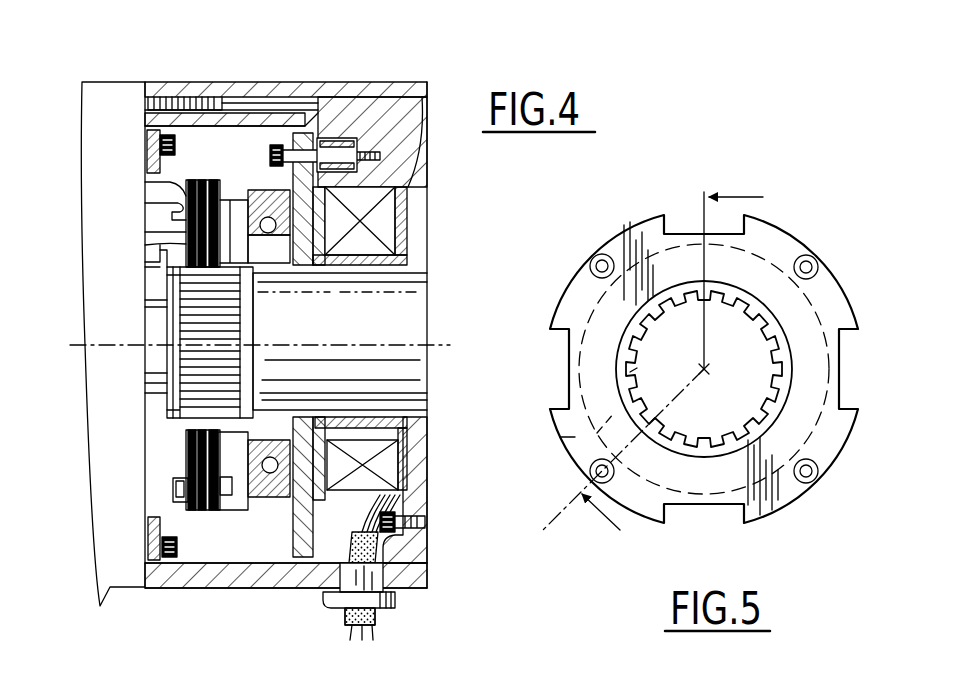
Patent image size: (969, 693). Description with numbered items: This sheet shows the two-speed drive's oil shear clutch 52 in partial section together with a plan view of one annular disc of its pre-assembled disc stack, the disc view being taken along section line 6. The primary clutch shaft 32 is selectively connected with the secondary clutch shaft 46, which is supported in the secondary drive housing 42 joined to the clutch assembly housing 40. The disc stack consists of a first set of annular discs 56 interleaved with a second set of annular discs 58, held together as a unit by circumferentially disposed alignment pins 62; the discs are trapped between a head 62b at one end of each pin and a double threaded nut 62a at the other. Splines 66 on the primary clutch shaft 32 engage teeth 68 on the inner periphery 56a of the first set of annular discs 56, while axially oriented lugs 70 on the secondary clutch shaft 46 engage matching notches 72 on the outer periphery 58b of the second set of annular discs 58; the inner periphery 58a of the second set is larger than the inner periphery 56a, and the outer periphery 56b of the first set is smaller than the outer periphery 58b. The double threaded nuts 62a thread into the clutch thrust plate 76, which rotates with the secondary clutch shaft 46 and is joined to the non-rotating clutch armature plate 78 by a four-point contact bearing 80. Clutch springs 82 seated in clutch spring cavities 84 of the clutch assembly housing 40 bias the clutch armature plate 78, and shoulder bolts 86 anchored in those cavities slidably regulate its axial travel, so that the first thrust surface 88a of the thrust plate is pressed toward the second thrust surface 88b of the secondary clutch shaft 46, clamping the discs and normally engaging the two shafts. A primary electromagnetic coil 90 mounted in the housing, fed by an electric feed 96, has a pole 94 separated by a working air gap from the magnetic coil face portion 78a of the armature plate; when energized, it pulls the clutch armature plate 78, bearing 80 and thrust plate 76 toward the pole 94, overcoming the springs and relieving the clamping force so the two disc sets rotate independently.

In FIG. 4, the secondary drive housing 42 is at (110, 82).
In FIG. 4, the clutch assembly housing 40 is at (210, 83).
In FIG. 4, the shoulder bolts 86 is at (312, 137).
In FIG. 4, the clutch spring cavities 84 is at (350, 142).
In FIG. 4, the clutch springs 82 is at (422, 88).
In FIG. 4, the primary electromagnetic coil 90 is at (410, 163).
In FIG. 4, the coil face portion 78a is at (418, 200).
In FIG. 4, the pole 94 is at (422, 233).
In FIG. 4, the primary clutch shaft 32 is at (427, 305).
In FIG. 4, the clutch thrust plate 76 is at (230, 227).
In FIG. 4, the axially oriented lugs 70 is at (145, 180).
In FIG. 4, the second thrust surface 88b is at (175, 203).
In FIG. 4, the first thrust surface 88a is at (183, 241).
In FIG. 4, the secondary clutch shaft 46 is at (160, 257).
In FIG. 4, the splines 66 is at (233, 330).
In FIG. 4, the alignment pins 62 is at (165, 520).
In FIG. 5, the alignment pins 62 is at (592, 256).
In FIG. 4, the head 62b is at (173, 498).
In FIG. 4, the double threaded nut 62a is at (220, 513).
In FIG. 4, the four-point contact bearing 80 is at (278, 487).
In FIG. 4, the clutch 52 is at (250, 560).
In FIG. 4, the clutch armature plate 78 is at (277, 557).
In FIG. 4, the electric feed 96 is at (383, 606).
In FIG. 5, the second set of annular discs 58 is at (632, 262).
In FIG. 5, the notches 72 is at (665, 222).
In FIG. 5, the inner periphery 58a is at (627, 399).
In FIG. 5, the outer periphery 58b is at (560, 437).
In FIG. 5, the outer periphery 56b is at (597, 433).
In FIG. 5, the first set of annular discs 56 is at (777, 350).
In FIG. 5, the inner periphery 56a is at (636, 369).
In FIG. 5, the teeth 68 is at (690, 442).
In FIG. 5, the section line 6 is at (653, 357).